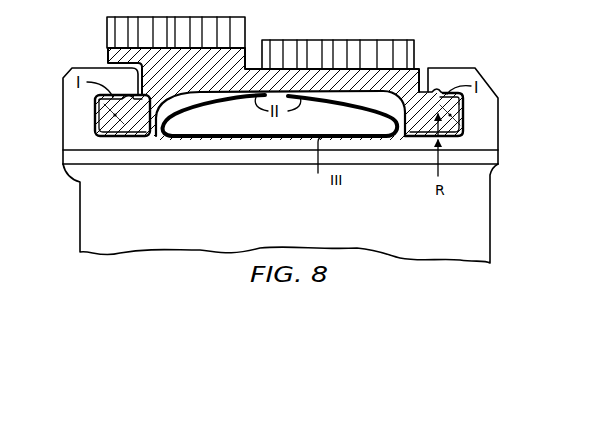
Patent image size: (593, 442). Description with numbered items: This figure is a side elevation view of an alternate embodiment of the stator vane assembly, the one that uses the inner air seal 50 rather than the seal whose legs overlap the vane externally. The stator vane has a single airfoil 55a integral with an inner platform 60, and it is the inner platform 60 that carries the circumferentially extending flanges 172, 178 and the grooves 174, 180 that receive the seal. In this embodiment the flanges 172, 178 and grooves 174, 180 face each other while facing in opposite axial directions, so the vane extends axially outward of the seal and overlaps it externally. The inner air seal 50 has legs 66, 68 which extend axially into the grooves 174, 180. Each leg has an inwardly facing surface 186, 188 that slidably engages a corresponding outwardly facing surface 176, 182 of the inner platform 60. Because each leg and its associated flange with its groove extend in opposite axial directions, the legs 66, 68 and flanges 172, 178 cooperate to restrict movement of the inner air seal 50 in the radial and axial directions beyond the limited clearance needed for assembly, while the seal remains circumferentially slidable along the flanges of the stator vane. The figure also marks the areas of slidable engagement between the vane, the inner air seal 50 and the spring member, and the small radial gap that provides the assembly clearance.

The inner air seal 50 is at (404, 28).
The airfoil 55a is at (330, 244).
The inner platform 60 is at (236, 158).
The leg 66 is at (115, 117).
The leg 68 is at (450, 117).
The flange 172 is at (70, 122).
The groove 174 is at (100, 137).
The outwardly facing surface 176 is at (102, 103).
The flange 178 is at (493, 121).
The groove 180 is at (466, 134).
The outwardly facing surface 182 is at (460, 98).
The inwardly facing surface 186 is at (123, 96).
The inwardly facing surface 188 is at (427, 96).